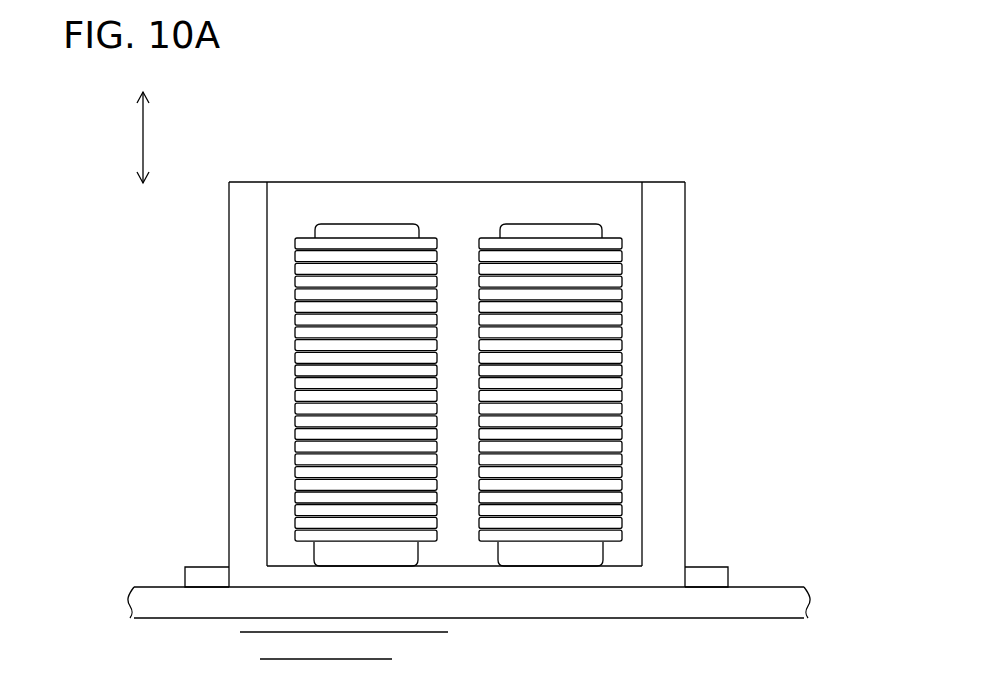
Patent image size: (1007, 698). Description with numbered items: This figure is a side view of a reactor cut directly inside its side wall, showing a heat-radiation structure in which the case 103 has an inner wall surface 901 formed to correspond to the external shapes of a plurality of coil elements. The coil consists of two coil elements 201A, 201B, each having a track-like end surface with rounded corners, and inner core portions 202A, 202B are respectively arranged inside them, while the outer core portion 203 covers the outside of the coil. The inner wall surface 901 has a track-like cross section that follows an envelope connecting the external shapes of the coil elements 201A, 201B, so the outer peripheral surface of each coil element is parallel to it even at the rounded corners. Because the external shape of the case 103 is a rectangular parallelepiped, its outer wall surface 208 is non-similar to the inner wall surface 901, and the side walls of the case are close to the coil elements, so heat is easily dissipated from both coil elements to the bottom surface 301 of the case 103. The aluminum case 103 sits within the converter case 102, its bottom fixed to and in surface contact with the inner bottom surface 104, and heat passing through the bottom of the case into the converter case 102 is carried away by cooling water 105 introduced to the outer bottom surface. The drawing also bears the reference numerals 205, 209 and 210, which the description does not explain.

The converter case 102 is at (148, 590).
The case 103 is at (688, 468).
The inner bottom surface 104 is at (763, 587).
The cooling water 105 is at (576, 675).
The coil element 201A is at (306, 238).
The coil element 201B is at (487, 236).
The inner core portion 202A is at (357, 223).
The inner core portion 202B is at (535, 225).
The outer core portion 203 is at (588, 203).
The movement direction 205 is at (140, 136).
The outer wall surface 208 is at (228, 243).
The inner side wall 209 is at (236, 328).
The outer right side wall 210 is at (678, 378).
The bottom surface 301 is at (632, 567).
The inner wall surface 901 is at (642, 285).